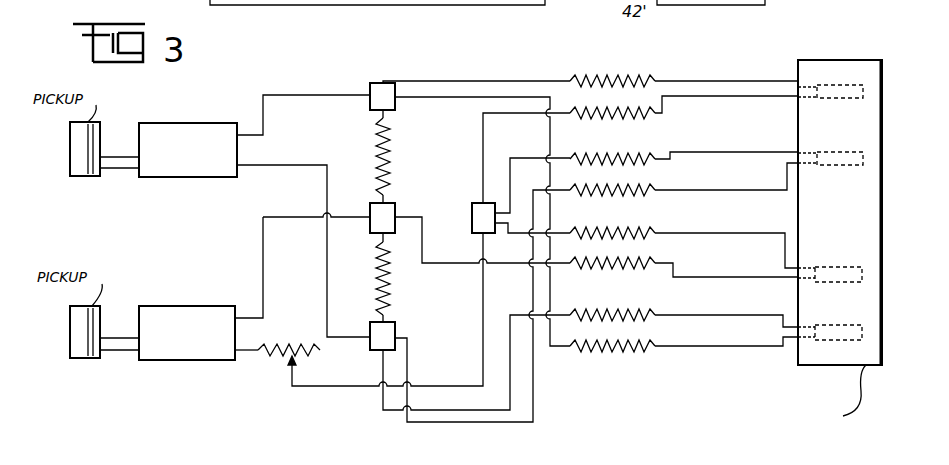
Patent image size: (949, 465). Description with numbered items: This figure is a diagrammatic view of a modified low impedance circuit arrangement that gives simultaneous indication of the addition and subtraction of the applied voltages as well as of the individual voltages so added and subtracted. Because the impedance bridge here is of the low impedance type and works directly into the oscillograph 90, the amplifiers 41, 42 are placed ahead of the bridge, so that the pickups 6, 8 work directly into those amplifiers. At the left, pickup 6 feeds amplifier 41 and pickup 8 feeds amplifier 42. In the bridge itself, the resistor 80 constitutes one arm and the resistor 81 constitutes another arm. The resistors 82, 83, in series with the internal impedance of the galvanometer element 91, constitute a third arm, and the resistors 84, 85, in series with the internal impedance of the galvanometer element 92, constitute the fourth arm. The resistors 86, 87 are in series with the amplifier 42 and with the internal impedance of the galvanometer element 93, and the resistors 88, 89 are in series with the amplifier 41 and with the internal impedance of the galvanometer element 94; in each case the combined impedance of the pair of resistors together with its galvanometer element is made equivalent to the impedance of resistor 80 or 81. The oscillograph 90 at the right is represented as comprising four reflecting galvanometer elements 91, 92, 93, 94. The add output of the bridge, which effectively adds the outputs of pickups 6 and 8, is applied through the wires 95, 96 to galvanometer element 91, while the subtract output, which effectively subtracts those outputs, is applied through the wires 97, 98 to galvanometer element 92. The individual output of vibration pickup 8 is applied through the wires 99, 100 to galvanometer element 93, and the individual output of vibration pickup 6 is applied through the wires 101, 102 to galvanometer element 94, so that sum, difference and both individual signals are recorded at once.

The pickup 6 is at (70, 146).
The pickup 8 is at (70, 328).
The amplifier 41 is at (194, 123).
The amplifier 42 is at (174, 306).
The resistor 80 is at (388, 190).
The resistor 81 is at (390, 294).
The resistor 82 is at (600, 80).
The resistor 83 is at (598, 113).
The resistor 84 is at (614, 160).
The resistor 85 is at (640, 191).
The resistor 86 is at (605, 233).
The resistor 87 is at (640, 265).
The resistor 88 is at (600, 315).
The resistor 89 is at (640, 346).
The oscillograph 90 is at (883, 112).
The galvanometer element 91 is at (838, 85).
The galvanometer element 92 is at (841, 135).
The galvanometer element 93 is at (832, 267).
The galvanometer element 94 is at (838, 311).
The wire 95 is at (710, 81).
The wire 96 is at (721, 96).
The wire 97 is at (725, 152).
The wire 98 is at (729, 190).
The wire 99 is at (725, 233).
The wire 100 is at (730, 277).
The wire 101 is at (718, 315).
The wire 102 is at (720, 346).